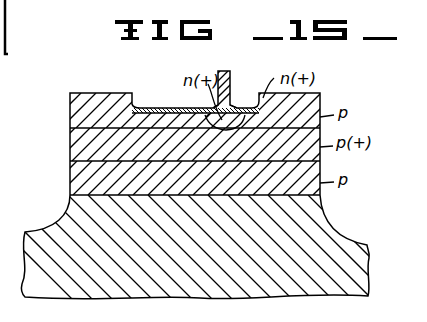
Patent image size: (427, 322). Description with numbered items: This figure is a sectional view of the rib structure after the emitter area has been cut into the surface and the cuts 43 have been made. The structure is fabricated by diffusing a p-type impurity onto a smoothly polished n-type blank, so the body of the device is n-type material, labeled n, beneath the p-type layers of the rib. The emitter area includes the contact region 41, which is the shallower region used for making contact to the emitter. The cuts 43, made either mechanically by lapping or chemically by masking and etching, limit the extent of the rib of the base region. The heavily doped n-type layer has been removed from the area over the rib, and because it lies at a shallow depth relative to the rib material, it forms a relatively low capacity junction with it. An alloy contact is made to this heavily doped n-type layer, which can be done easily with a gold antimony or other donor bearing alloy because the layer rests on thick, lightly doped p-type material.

The contact region 41 is at (152, 103).
The cuts 43 is at (70, 146).
The n-type substrate n is at (333, 228).